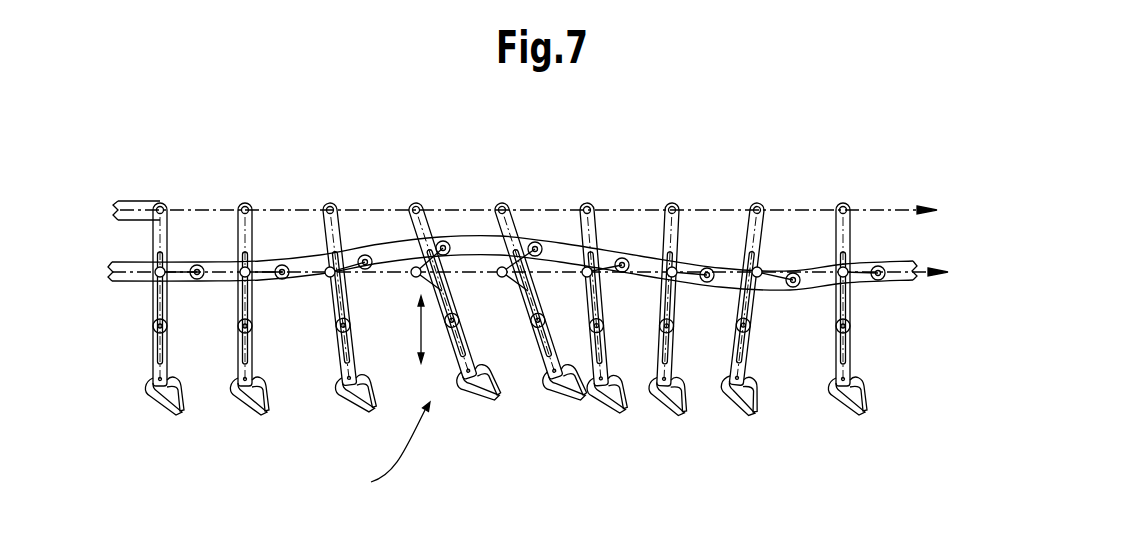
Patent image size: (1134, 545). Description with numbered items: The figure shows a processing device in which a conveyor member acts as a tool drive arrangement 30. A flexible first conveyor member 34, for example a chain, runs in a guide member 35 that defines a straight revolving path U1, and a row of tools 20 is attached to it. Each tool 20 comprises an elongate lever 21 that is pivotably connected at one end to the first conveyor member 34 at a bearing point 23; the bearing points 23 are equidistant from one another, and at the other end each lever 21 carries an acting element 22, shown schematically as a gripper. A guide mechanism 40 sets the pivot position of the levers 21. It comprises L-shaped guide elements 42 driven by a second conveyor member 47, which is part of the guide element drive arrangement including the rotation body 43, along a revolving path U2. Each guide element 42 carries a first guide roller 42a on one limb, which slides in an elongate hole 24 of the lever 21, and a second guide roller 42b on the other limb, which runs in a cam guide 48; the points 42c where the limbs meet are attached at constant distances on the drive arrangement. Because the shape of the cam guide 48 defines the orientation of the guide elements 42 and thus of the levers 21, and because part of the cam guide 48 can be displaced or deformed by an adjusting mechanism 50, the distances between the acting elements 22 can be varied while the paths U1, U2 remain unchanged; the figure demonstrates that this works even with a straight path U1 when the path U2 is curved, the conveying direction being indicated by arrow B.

The tool 20 is at (208, 359).
The lever 21 is at (341, 208).
The acting element 22 is at (235, 396).
The bearing point 23 is at (421, 207).
The elongate hole 24 is at (351, 352).
The tool drive arrangement 30 is at (323, 300).
The first conveyor member 34 is at (537, 209).
The guide member 35 is at (134, 198).
The guide mechanism 40 is at (140, 292).
The guide element 42 is at (330, 303).
The first guide roller 42a is at (336, 340).
The second guide roller 42b is at (365, 256).
The point where the limbs meet 42c is at (327, 265).
The rotation body 43 is at (862, 281).
The second conveyor member 47 is at (479, 275).
The cam guide 48 is at (774, 290).
The adjusting mechanism 50 is at (419, 333).
The conveying direction B is at (390, 449).
The revolving path U1 is at (871, 209).
The revolving path U2 is at (899, 274).